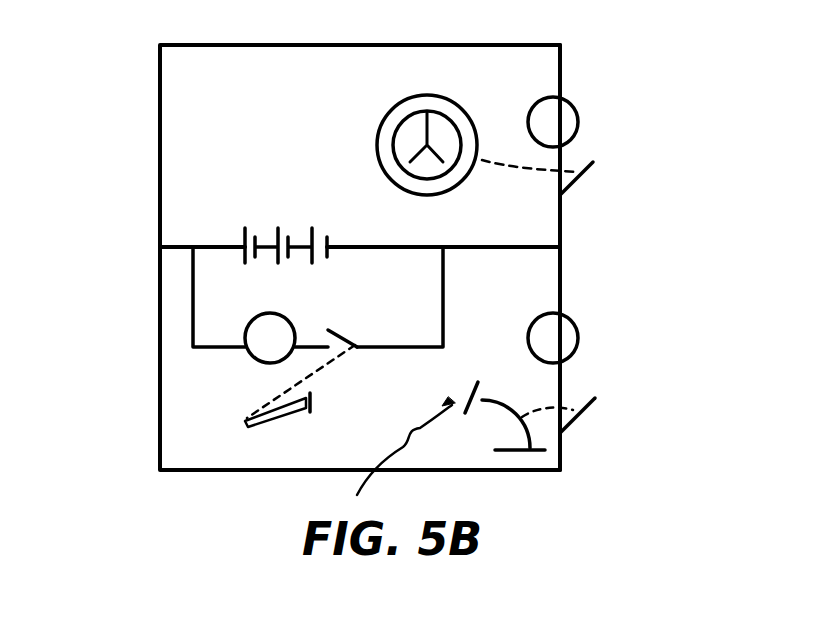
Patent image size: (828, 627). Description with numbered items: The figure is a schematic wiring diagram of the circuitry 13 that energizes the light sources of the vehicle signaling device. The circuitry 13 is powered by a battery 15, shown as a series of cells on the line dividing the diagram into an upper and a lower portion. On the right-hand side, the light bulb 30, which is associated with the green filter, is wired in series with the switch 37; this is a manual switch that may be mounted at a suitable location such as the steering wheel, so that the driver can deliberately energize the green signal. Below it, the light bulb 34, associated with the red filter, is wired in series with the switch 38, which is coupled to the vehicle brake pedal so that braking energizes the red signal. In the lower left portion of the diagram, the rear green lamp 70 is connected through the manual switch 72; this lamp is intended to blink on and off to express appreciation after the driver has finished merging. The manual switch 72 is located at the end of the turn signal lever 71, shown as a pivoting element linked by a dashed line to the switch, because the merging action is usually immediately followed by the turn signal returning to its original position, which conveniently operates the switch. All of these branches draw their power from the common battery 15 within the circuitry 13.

The circuitry 13 is at (157, 127).
The battery 15 is at (252, 217).
The light bulb 30 is at (578, 100).
The light bulb 34 is at (578, 320).
The manual switch 37 is at (578, 183).
The switch 38 is at (573, 425).
The rear green lamp 70 is at (247, 365).
The turn signal lever 71 is at (245, 427).
The manual switch 72 is at (360, 337).